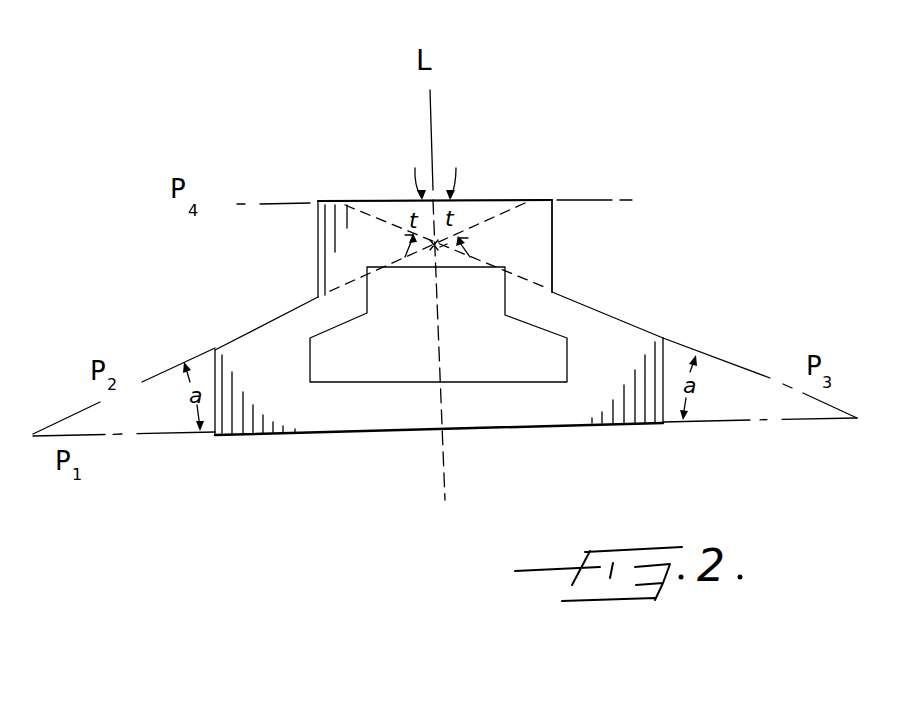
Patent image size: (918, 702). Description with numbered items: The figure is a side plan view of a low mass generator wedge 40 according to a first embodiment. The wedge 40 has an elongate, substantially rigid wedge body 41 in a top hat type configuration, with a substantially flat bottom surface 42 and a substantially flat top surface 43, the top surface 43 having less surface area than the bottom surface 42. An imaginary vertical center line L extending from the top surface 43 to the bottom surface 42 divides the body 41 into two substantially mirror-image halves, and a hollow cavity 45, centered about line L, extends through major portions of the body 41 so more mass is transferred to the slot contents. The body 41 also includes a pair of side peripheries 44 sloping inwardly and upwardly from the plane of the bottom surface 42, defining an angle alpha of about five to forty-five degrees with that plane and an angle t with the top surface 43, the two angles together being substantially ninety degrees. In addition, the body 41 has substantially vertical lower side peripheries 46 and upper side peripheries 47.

The wedge 40 is at (708, 82).
The wedge body 41 is at (538, 265).
The bottom surface 42 is at (337, 433).
The top surface 43 is at (353, 200).
The side peripheries 44 is at (647, 332).
The hollow cavity 45 is at (553, 352).
The lower side peripheries 46 is at (215, 413).
The upper side peripheries 47 is at (322, 250).